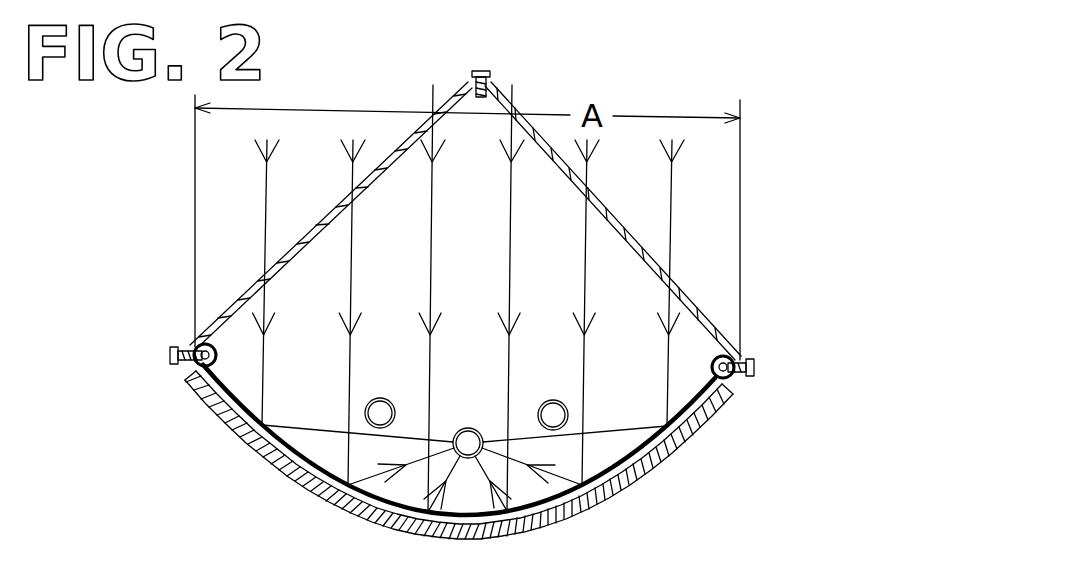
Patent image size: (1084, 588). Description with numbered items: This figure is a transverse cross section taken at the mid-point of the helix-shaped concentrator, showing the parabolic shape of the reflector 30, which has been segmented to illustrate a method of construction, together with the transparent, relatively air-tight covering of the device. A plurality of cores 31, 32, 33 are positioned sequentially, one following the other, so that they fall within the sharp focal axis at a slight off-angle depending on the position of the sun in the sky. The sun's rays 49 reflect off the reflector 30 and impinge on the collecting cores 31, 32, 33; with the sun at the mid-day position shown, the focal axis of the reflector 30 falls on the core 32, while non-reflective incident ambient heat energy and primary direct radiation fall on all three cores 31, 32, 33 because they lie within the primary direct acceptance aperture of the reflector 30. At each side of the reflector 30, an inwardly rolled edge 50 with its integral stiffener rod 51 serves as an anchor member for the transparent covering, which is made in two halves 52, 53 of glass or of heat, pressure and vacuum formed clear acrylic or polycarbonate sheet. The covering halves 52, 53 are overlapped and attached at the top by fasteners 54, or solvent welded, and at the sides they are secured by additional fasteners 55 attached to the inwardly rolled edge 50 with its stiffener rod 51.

The reflector 30 is at (628, 462).
The core 31 is at (375, 430).
The core 32 is at (468, 458).
The core 33 is at (555, 432).
The sun's rays 49 is at (508, 282).
The inwardly rolled edge 50 is at (717, 398).
The stiffener rod 51 is at (733, 380).
The transparent covering half 52 is at (250, 286).
The transparent covering half 53 is at (688, 298).
The fastener 54 is at (480, 71).
The fastener 55 is at (754, 366).